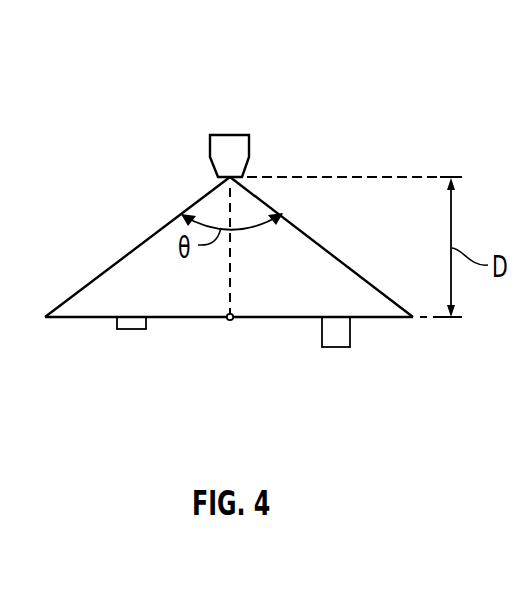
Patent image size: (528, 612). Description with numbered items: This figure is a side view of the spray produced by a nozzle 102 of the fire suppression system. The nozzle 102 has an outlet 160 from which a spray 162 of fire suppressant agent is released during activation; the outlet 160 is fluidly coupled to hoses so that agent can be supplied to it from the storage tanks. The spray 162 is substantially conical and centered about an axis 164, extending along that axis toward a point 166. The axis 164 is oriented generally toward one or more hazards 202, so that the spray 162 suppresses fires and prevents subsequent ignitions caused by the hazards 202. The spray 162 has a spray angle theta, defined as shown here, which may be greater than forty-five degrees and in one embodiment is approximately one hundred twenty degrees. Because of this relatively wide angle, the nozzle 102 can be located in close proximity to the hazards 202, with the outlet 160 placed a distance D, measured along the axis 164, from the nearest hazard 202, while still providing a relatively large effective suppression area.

The nozzle 102 is at (249, 148).
The outlet 160 is at (225, 181).
The spray 162 is at (327, 251).
The axis 164 is at (230, 275).
The point 166 is at (229, 321).
The hazard 202 is at (133, 329).